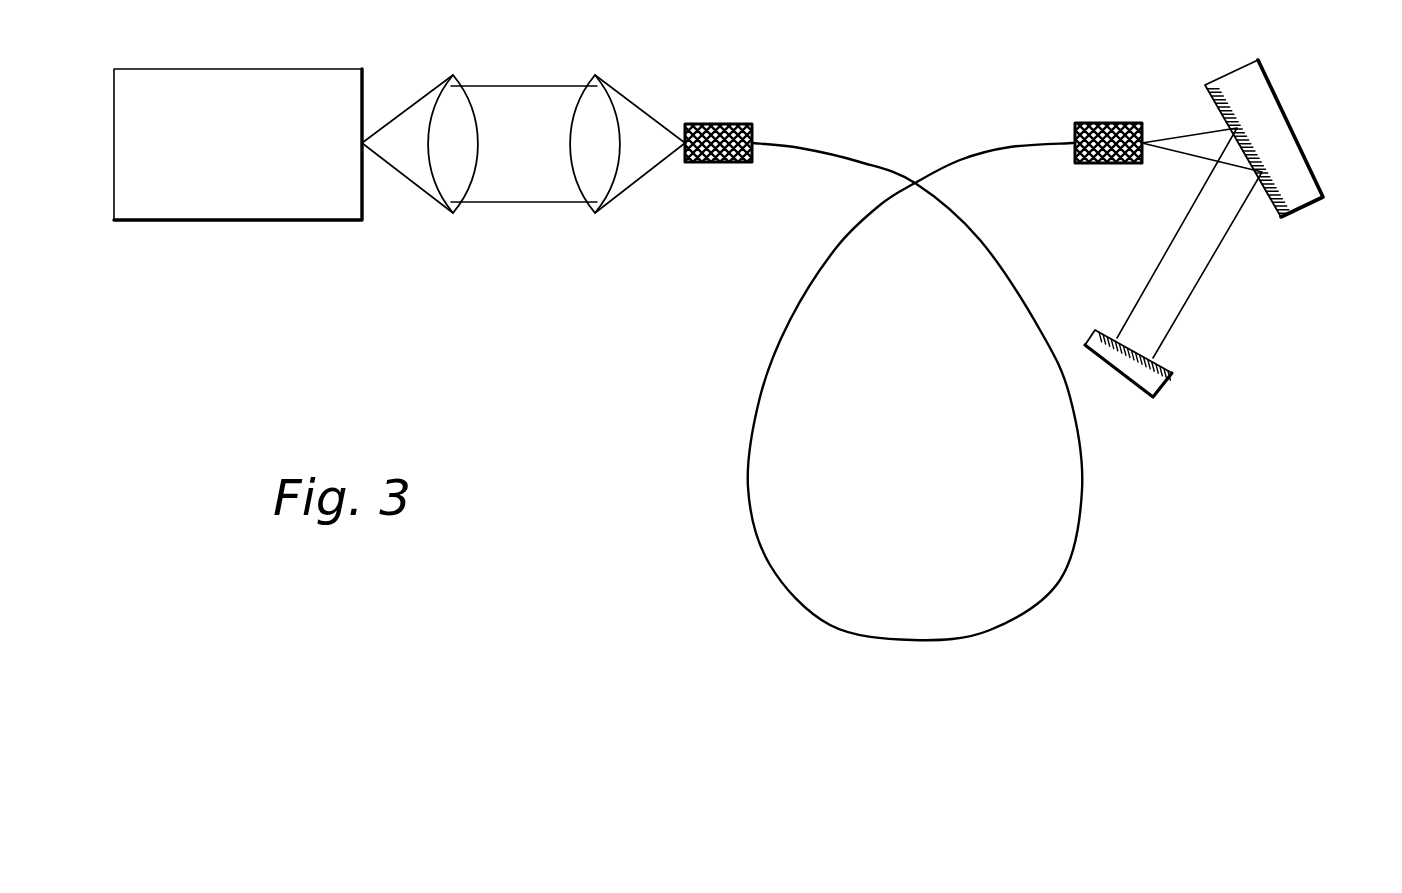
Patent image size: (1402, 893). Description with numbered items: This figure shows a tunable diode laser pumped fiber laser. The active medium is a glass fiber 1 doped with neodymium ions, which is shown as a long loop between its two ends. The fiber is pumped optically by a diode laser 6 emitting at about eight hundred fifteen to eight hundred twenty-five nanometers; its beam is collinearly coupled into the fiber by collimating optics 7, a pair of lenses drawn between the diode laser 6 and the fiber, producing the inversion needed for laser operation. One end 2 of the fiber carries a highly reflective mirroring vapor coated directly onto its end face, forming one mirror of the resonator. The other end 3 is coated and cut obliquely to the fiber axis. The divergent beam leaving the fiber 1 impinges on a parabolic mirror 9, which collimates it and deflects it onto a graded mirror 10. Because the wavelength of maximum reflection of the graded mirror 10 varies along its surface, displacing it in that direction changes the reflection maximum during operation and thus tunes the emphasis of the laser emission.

The glass fiber 1 is at (836, 248).
The fiber end with highly reflective mirroring 2 is at (685, 127).
The other end of the glass fiber 3 is at (1143, 130).
The diode laser 6 is at (193, 204).
The collimating optics 7 is at (592, 223).
The parabolic mirror 9 is at (1298, 143).
The graded mirror 10 is at (1172, 380).